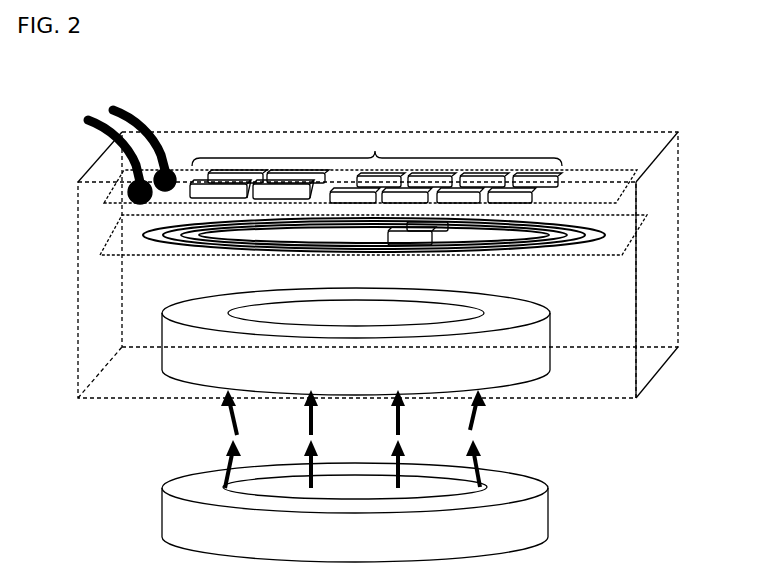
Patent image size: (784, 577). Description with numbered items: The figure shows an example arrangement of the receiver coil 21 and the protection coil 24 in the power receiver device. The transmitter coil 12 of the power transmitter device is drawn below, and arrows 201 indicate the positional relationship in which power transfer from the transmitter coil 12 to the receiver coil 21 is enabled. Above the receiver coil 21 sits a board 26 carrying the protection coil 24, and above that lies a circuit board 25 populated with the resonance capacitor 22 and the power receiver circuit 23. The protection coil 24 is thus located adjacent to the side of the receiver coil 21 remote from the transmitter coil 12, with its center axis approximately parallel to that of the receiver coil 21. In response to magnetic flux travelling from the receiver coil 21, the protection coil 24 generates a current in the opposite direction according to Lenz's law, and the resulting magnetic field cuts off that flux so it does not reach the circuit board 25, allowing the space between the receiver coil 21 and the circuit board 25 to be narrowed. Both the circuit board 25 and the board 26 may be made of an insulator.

The transmitter coil 12 is at (540, 520).
The receiver coil 21 is at (538, 362).
The resonance capacitor 22 is at (562, 193).
The power receiver circuit 23 is at (375, 151).
The protection coil 24 is at (592, 248).
The circuit board 25 is at (620, 170).
The board 26 is at (650, 223).
The arrows 201 is at (482, 416).